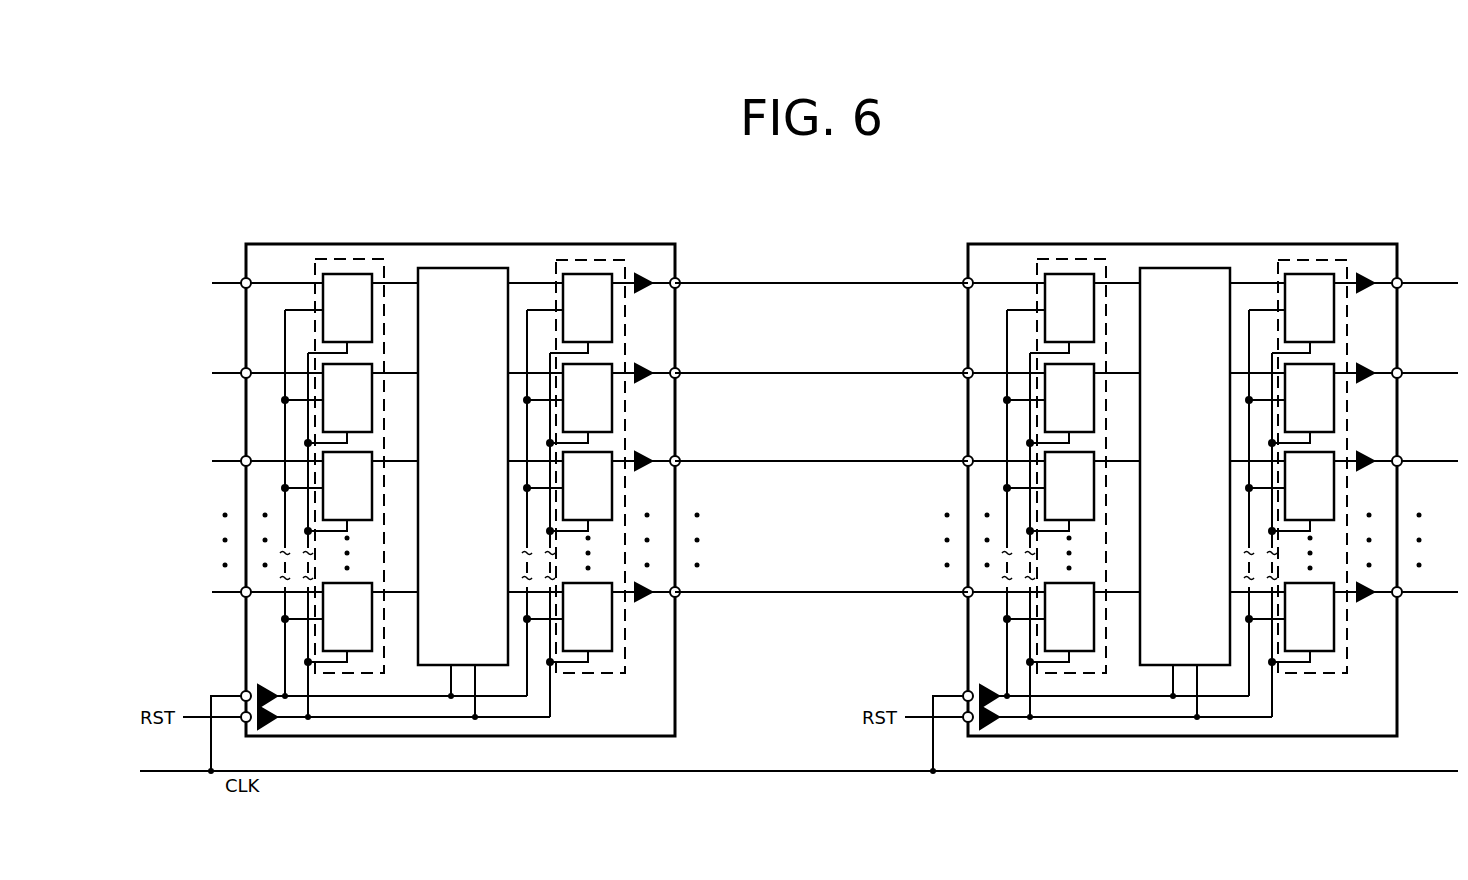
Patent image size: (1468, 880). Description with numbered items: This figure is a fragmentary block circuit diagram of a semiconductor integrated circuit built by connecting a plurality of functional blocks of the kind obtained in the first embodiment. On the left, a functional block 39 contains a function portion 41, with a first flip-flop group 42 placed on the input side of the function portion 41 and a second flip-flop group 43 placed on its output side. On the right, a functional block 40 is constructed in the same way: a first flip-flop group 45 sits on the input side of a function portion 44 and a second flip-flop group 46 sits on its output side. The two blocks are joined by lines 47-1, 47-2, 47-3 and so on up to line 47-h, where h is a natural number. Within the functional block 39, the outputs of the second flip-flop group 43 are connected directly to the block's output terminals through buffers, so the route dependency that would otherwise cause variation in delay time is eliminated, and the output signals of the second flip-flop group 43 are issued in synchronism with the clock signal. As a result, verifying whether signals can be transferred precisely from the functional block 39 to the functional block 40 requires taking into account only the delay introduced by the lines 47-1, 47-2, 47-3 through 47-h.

The functional block 39 is at (537, 244).
The functional block 40 is at (1182, 464).
The function portion 41 is at (470, 268).
The first flip-flop group 42 is at (312, 276).
The second flip-flop group 43 is at (597, 260).
The function portion 44 is at (1196, 437).
The first flip-flop group 45 is at (1012, 452).
The second flip-flop group 46 is at (1305, 432).
The line 47-1 is at (806, 265).
The line 47-2 is at (806, 355).
The line 47-3 is at (806, 443).
The line 47-h is at (806, 574).